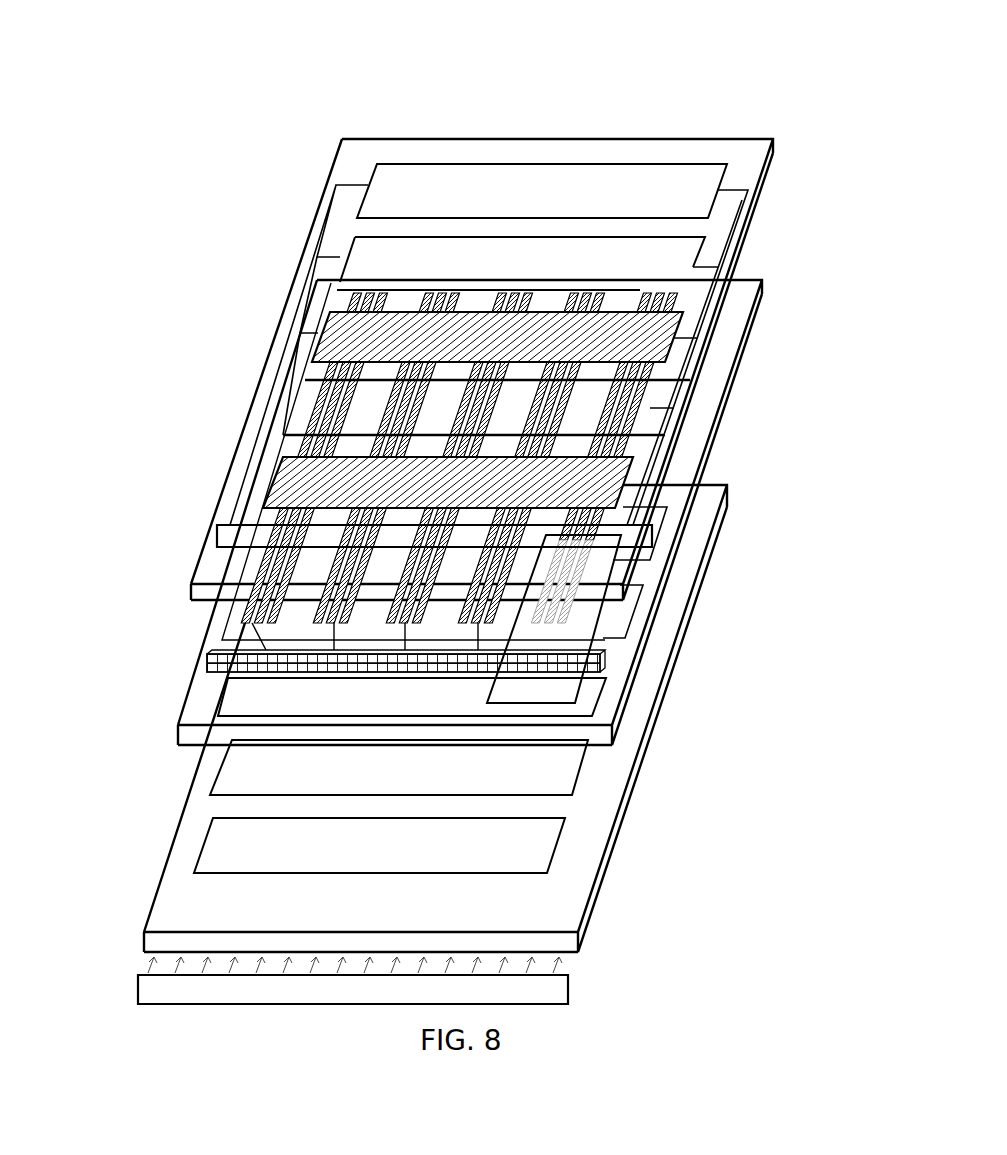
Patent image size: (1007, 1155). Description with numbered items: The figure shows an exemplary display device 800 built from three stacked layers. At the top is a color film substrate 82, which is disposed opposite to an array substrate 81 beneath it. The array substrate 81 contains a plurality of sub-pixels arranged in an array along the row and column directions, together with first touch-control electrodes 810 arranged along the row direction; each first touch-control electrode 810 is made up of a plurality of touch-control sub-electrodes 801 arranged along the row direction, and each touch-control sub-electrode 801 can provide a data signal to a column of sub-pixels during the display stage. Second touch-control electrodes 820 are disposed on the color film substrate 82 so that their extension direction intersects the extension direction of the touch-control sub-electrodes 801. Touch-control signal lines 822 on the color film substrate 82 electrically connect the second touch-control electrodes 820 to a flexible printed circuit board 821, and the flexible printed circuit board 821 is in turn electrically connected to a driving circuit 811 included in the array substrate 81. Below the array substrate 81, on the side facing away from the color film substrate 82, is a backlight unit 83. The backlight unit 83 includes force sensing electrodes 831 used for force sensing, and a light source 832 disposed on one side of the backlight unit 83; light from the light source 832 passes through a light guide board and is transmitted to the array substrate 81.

The display device 800 is at (812, 35).
The color film substrate 82 is at (755, 166).
The second touch-control electrodes 820 is at (585, 182).
The touch-control signal lines 822 is at (258, 420).
The flexible printed circuit (FPC) board 821 is at (560, 688).
The array substrate 81 is at (715, 393).
The first touch-control electrodes 810 is at (240, 612).
The touch-control sub-electrodes 801 is at (237, 627).
The driving circuit 811 is at (233, 695).
The backlight unit 83 is at (177, 862).
The force sensing electrodes 831 is at (233, 763).
The light source 832 is at (568, 977).